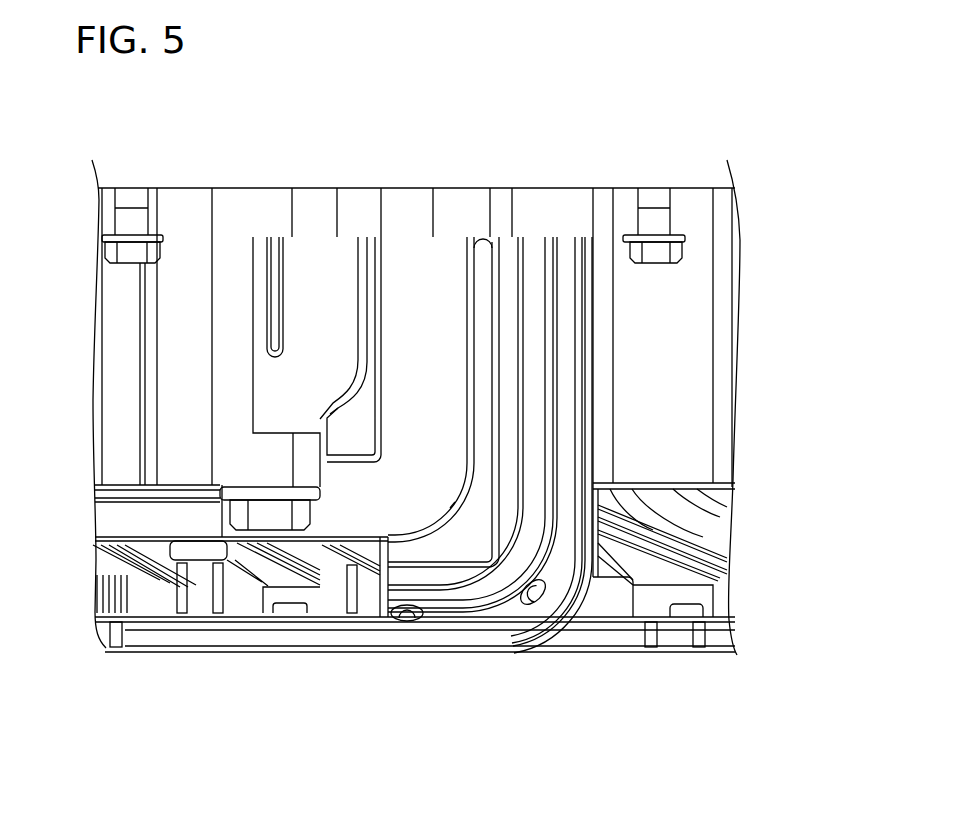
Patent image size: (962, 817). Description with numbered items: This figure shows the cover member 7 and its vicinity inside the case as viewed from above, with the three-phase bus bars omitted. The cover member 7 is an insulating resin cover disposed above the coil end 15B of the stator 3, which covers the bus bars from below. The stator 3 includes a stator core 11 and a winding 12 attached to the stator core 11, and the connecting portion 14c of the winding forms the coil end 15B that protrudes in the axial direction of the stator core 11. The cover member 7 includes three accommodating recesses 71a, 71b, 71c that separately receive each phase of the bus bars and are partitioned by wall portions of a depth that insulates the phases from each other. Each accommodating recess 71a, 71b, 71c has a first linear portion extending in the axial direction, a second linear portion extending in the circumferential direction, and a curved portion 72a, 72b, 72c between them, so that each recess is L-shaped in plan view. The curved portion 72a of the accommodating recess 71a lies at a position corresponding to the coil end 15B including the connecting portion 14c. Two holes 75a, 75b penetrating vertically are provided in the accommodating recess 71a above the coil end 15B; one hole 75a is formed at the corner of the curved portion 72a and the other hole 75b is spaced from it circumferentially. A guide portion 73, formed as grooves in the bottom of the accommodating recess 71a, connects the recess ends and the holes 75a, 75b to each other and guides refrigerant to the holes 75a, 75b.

The stator 3 is at (835, 472).
The cover member 7 is at (437, 420).
The stator core 11 is at (724, 470).
The winding 12 is at (710, 532).
The connecting portion 14c is at (719, 615).
The coil end 15B is at (420, 637).
The accommodating recess 71a is at (580, 262).
The accommodating recess 71b is at (470, 258).
The accommodating recess 71c is at (284, 247).
The curved portion 72a is at (722, 465).
The curved portion 72b is at (447, 513).
The curved portion 72c is at (337, 403).
The guide portion 73 is at (523, 254).
The hole 75a is at (530, 604).
The hole 75b is at (398, 618).